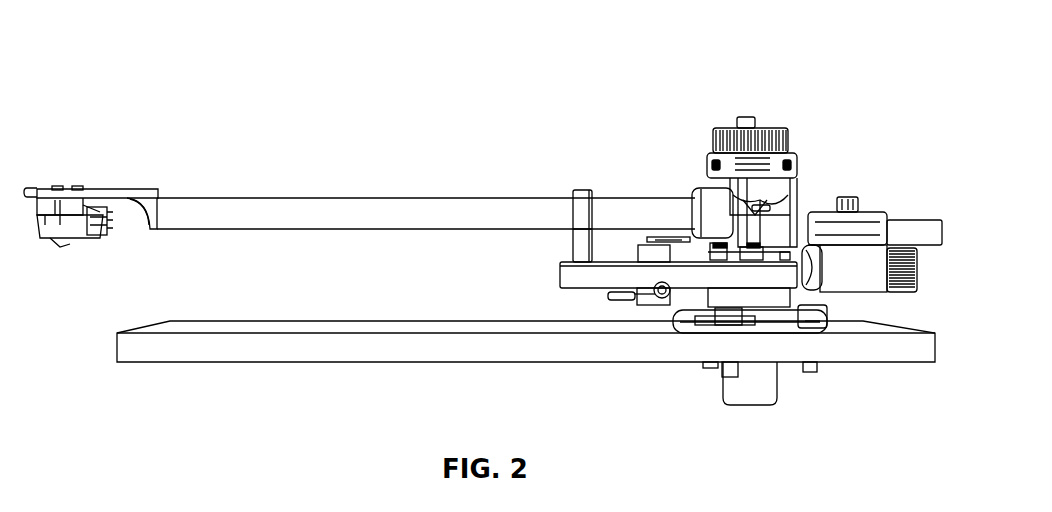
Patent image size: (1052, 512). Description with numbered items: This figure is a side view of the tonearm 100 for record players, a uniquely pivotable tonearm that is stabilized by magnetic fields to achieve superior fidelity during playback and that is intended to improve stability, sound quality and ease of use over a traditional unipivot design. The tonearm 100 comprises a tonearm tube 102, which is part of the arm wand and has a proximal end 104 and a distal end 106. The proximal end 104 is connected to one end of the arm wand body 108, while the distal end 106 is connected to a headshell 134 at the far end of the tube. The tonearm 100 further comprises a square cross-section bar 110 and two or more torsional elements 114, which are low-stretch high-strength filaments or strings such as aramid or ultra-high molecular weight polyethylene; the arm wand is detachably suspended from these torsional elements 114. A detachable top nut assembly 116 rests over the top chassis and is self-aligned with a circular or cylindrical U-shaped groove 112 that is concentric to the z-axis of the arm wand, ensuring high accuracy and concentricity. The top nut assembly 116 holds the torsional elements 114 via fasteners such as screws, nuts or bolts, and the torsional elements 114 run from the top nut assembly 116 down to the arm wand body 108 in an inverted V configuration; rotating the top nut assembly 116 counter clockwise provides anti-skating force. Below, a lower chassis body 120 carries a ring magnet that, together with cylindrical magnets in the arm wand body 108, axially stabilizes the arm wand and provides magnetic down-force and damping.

The tonearm 100 is at (158, 58).
The tonearm tube 102 is at (415, 192).
The proximal end 104 is at (697, 188).
The distal end 106 is at (173, 223).
The arm wand body 108 is at (753, 248).
The square cross-section bar 110 is at (808, 262).
The circular/cylindrical U-shaped groove 112 is at (747, 178).
The torsional elements 114 is at (797, 180).
The detachable top nut assembly 116 is at (777, 118).
The lower chassis body 120 is at (567, 273).
The headshell 134 is at (117, 190).